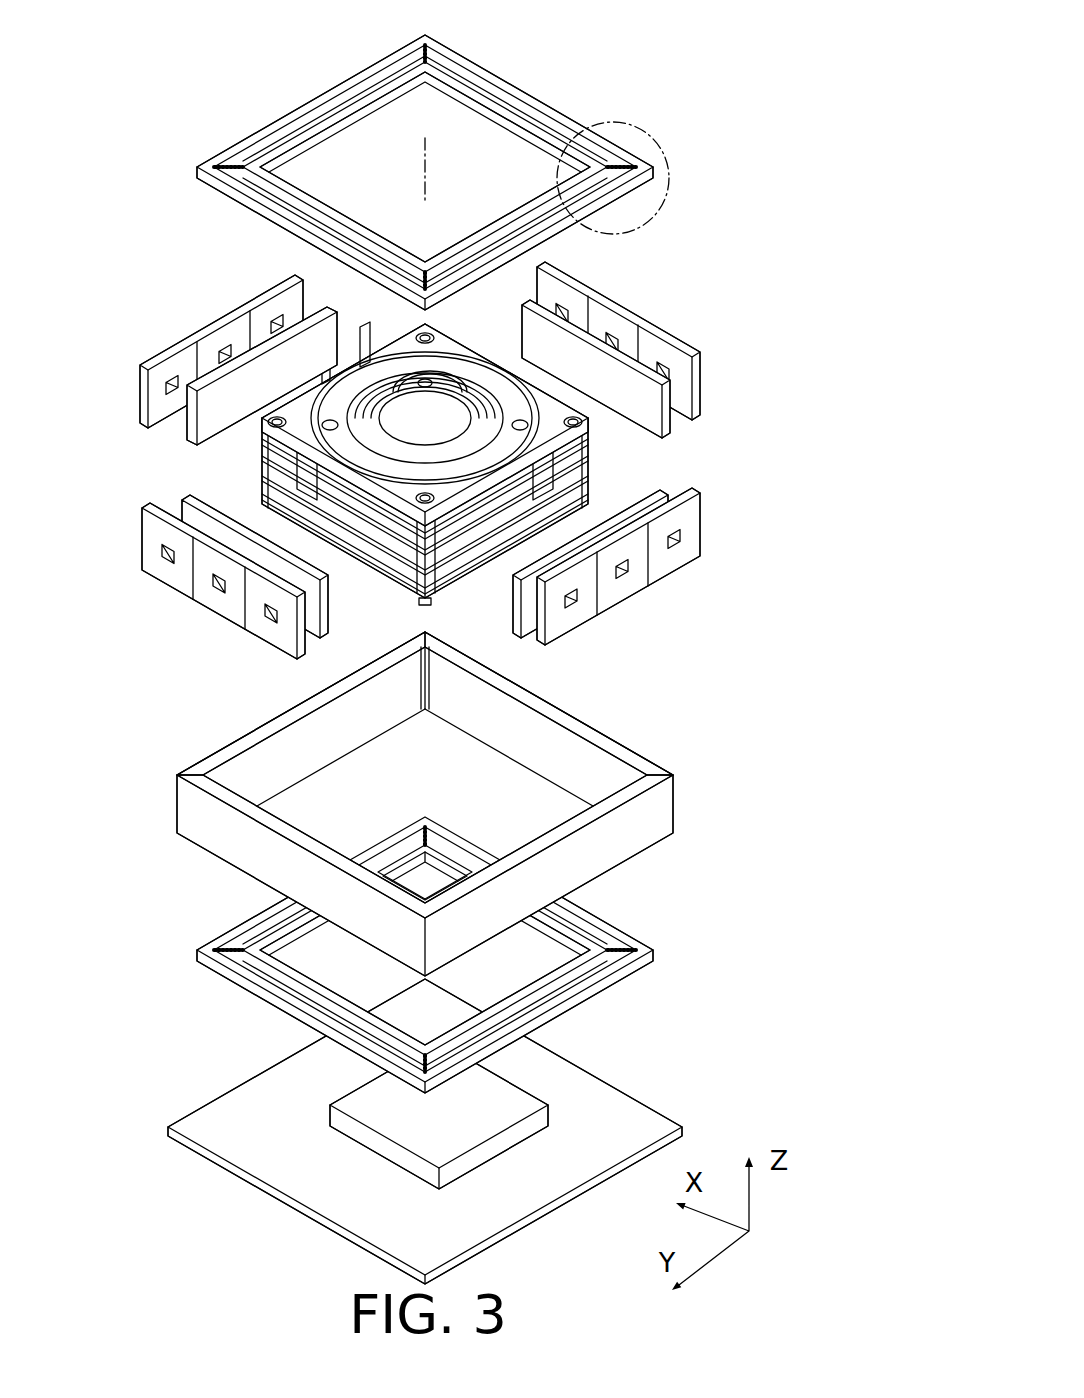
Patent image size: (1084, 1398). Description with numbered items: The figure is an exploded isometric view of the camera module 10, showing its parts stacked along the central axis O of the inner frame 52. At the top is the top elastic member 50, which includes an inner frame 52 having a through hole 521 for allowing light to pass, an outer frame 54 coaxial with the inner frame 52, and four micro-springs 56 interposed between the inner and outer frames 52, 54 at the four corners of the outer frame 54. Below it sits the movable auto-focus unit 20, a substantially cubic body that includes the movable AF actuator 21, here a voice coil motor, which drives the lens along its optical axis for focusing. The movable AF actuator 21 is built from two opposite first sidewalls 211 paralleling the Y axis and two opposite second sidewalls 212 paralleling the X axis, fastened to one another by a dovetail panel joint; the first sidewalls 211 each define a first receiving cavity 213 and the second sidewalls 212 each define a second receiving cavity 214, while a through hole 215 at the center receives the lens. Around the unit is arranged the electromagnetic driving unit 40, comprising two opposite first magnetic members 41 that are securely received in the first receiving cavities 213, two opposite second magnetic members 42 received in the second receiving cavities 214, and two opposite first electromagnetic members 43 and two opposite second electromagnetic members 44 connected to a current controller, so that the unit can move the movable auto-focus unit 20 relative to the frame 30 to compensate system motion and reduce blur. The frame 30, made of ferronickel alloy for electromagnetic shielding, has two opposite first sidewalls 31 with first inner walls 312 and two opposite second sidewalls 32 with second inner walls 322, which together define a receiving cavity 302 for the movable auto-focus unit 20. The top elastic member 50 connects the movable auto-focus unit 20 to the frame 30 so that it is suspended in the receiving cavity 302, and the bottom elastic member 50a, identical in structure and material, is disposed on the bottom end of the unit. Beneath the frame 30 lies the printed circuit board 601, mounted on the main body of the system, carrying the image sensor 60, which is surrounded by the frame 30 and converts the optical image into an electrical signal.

The camera module 10 is at (98, 89).
The movable auto-focus unit 20 is at (355, 463).
The movable AF actuator 21 is at (443, 348).
The first sidewall 211 is at (437, 603).
The second sidewall 212 is at (435, 568).
The first receiving cavity 213 is at (470, 558).
The second receiving cavity 214 is at (290, 505).
The through hole 215 is at (412, 417).
The frame 30 is at (419, 804).
The first sidewall 31 is at (308, 702).
The second sidewall 32 is at (588, 728).
The first inner wall 312 is at (275, 758).
The second inner wall 322 is at (510, 712).
The receiving cavity 302 is at (533, 803).
The electromagnetic driving unit 40 is at (478, 460).
The first magnetic member 41 is at (653, 490).
The second magnetic member 42 is at (667, 417).
The first electromagnetic member 43 is at (650, 566).
The second electromagnetic member 44 is at (697, 378).
The top elastic member 50 is at (425, 161).
The bottom elastic member 50a is at (625, 938).
The inner frame 52 is at (443, 78).
The through hole 521 is at (502, 148).
The outer frame 54 is at (512, 86).
The micro-spring 56 is at (572, 72).
The image sensor 60 is at (502, 1099).
The printed circuit board 601 is at (628, 1115).
The central axis O is at (411, 162).
The detail region V is at (652, 142).